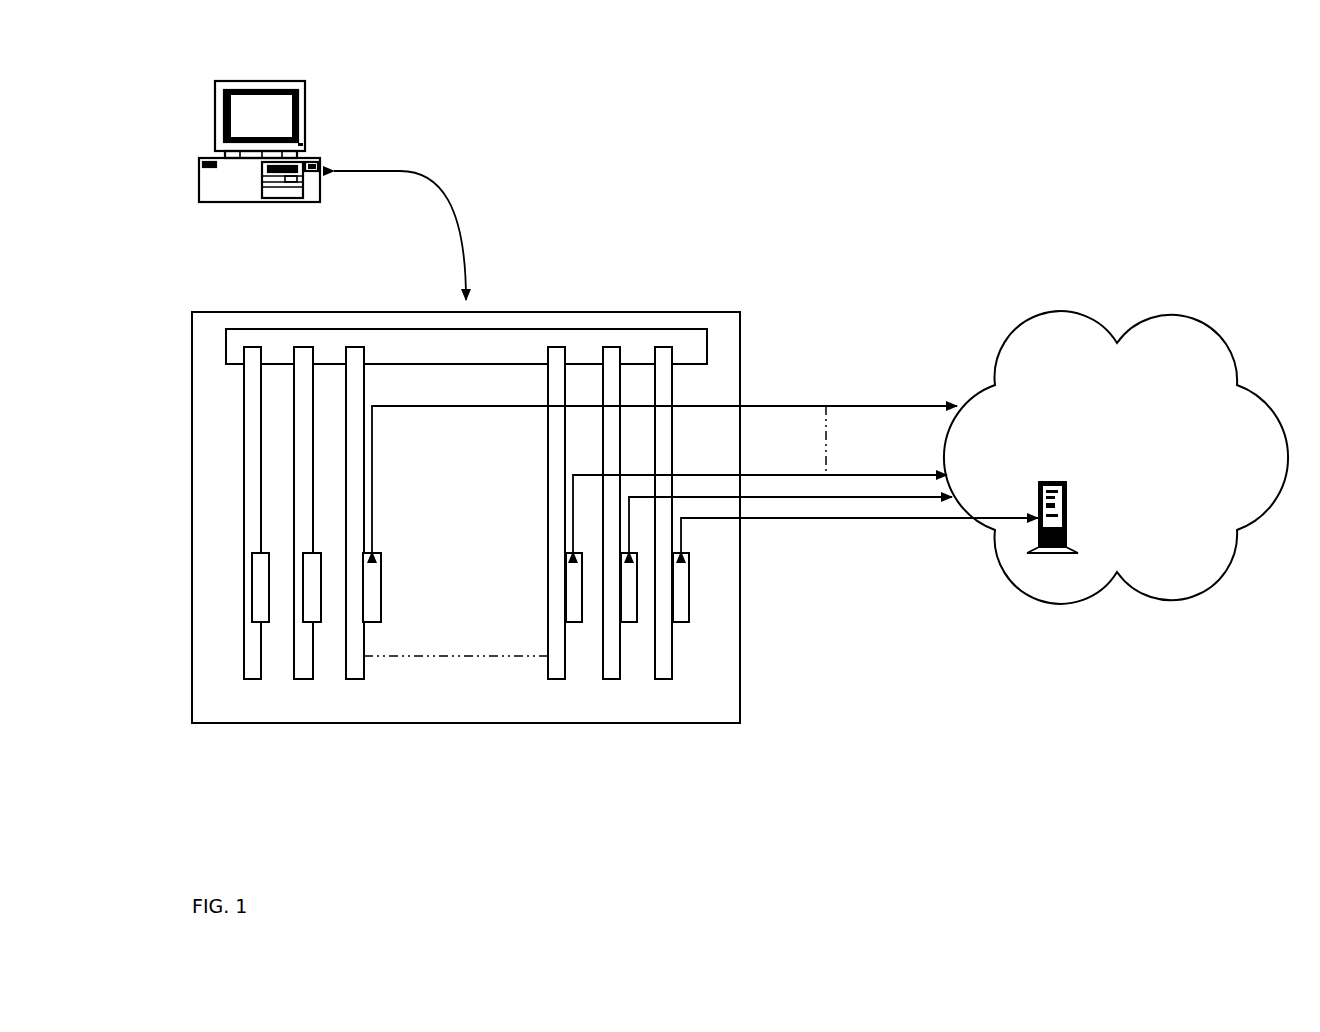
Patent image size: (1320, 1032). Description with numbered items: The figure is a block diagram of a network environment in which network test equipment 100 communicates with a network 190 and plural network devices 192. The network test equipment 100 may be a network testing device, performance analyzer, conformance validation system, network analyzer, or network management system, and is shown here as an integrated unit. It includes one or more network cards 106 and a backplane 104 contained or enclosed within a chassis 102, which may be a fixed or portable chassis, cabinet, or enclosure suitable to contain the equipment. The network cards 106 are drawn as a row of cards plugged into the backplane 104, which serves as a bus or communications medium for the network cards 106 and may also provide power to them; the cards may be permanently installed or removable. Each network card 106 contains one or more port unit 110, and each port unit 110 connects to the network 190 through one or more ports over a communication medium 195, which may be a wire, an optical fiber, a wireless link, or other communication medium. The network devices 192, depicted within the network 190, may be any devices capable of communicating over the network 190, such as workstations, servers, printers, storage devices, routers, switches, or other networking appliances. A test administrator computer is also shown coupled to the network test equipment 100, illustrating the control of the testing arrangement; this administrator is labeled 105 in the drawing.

The network test equipment 100 is at (673, 104).
The chassis 102 is at (588, 312).
The backplane 104 is at (655, 330).
The test administrator 105 is at (319, 190).
The network cards 106 is at (685, 740).
The port unit 110 is at (677, 622).
The network 190 is at (1116, 457).
The network devices 192 is at (1066, 517).
The communication medium 195 is at (810, 519).